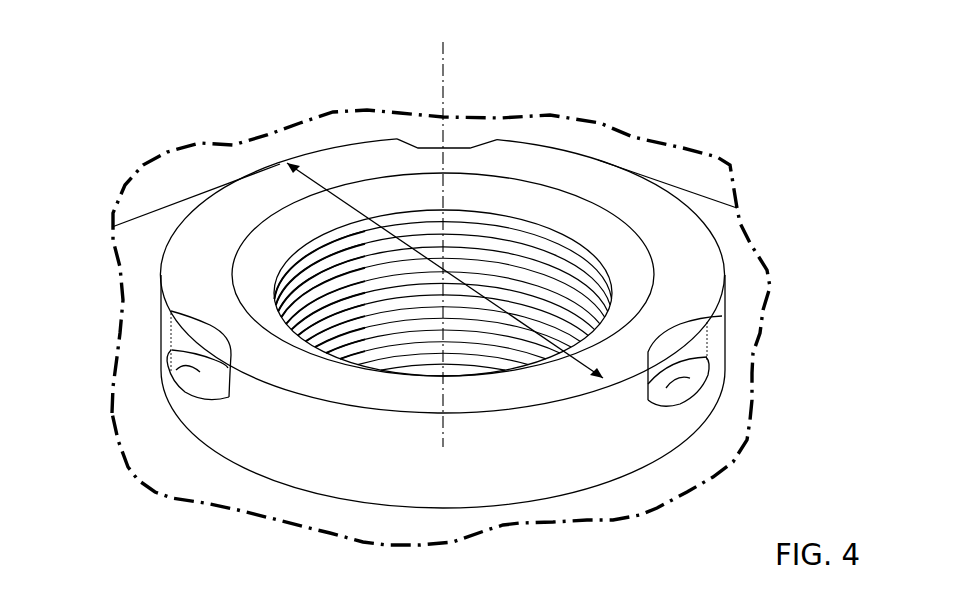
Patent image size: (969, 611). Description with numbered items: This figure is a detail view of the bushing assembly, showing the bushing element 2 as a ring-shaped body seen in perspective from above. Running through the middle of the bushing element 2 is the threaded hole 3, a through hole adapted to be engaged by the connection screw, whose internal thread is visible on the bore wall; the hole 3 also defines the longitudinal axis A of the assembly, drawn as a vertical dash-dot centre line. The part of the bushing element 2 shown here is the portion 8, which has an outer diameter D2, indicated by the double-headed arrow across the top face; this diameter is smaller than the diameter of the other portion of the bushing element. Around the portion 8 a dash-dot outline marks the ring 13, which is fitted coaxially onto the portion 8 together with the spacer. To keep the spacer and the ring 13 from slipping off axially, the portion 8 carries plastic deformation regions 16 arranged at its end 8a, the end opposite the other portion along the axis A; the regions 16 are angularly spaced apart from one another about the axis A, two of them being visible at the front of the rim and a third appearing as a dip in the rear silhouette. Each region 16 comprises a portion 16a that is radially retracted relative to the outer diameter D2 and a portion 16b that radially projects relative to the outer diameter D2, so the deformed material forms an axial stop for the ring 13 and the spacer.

The bushing element 2 is at (443, 431).
The portion 8 is at (497, 476).
The end 8a is at (691, 234).
The threaded hole 3 is at (550, 291).
The ring 13 is at (153, 226).
The plastic deformation region 16 is at (445, 375).
The portion 16a is at (187, 328).
The portion 16b is at (212, 381).
The outer diameter D2 is at (356, 207).
The longitudinal axis A is at (446, 45).